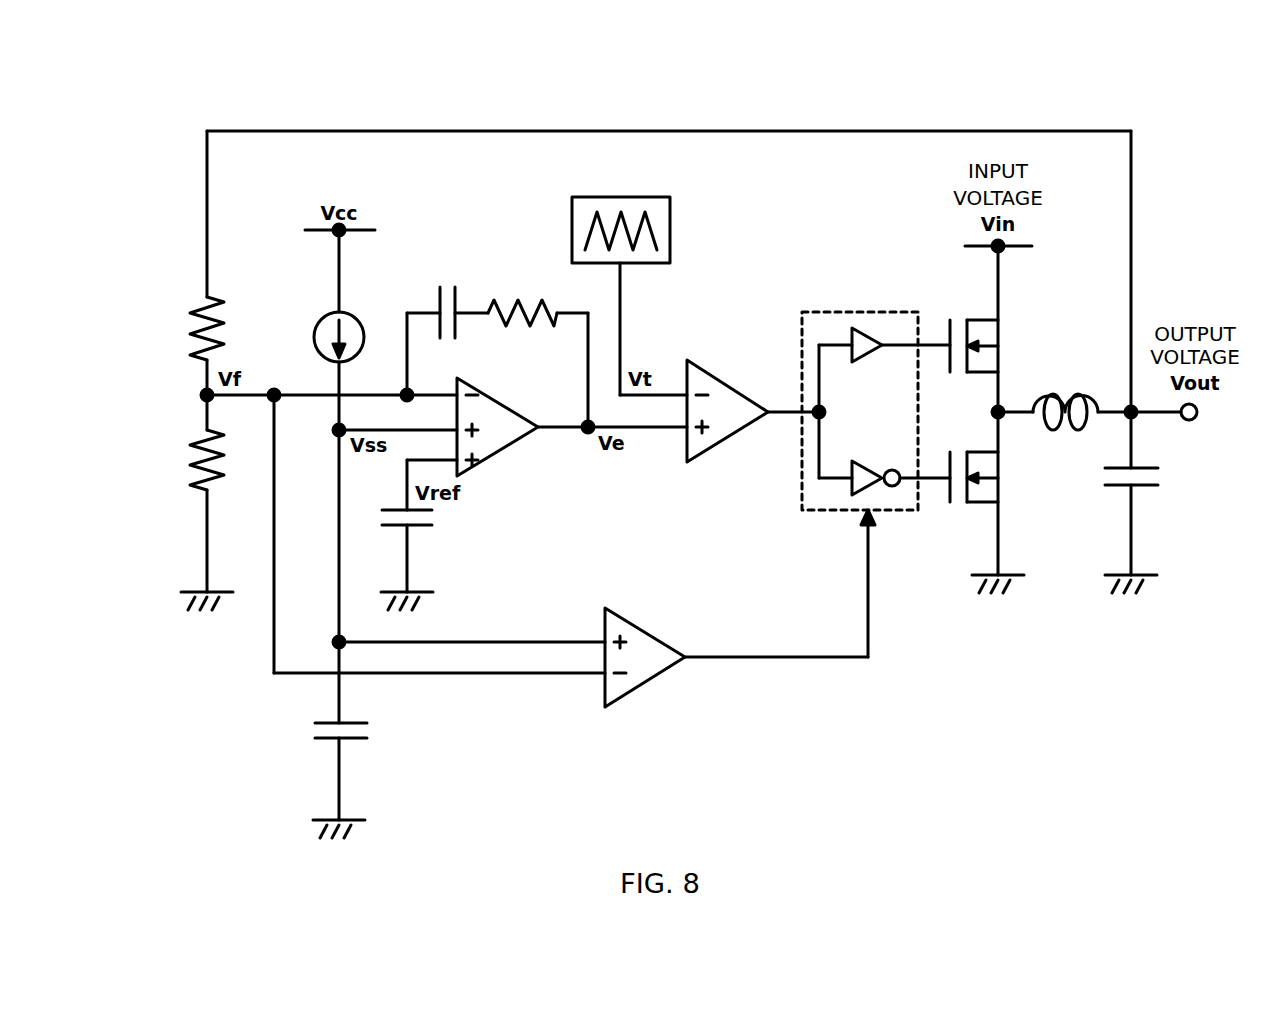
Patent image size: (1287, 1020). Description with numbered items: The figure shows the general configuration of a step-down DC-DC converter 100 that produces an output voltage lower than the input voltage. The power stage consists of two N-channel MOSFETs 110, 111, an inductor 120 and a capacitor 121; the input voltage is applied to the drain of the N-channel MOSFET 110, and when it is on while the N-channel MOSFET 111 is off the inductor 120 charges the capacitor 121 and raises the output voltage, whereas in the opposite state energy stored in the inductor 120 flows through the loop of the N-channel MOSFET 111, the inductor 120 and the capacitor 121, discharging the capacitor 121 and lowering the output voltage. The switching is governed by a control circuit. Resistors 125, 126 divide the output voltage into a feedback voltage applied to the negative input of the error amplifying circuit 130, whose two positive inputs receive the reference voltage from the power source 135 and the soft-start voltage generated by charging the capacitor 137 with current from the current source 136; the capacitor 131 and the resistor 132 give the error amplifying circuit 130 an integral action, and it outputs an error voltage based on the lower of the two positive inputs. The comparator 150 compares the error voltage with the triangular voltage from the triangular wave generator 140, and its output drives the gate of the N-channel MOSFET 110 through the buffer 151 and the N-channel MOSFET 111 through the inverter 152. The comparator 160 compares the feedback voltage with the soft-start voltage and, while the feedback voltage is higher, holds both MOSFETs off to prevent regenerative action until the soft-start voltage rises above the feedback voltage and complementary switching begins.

The DC-DC converter 100 is at (530, 88).
The N-channel MOSFET 110 is at (982, 320).
The N-channel MOSFET 111 is at (985, 503).
The inductor 120 is at (1065, 395).
The capacitor 121 is at (1150, 487).
The resistor 125 is at (213, 297).
The resistor 126 is at (215, 485).
The error amplifying circuit 130 is at (505, 452).
The capacitor 131 is at (445, 287).
The resistor 132 is at (512, 302).
The power source 135 is at (415, 527).
The current source 136 is at (324, 322).
The capacitor 137 is at (355, 740).
The triangular wave generator 140 is at (670, 232).
The comparator 150 is at (722, 375).
The buffer 151 is at (870, 356).
The inverter 152 is at (880, 470).
The comparator 160 is at (645, 630).